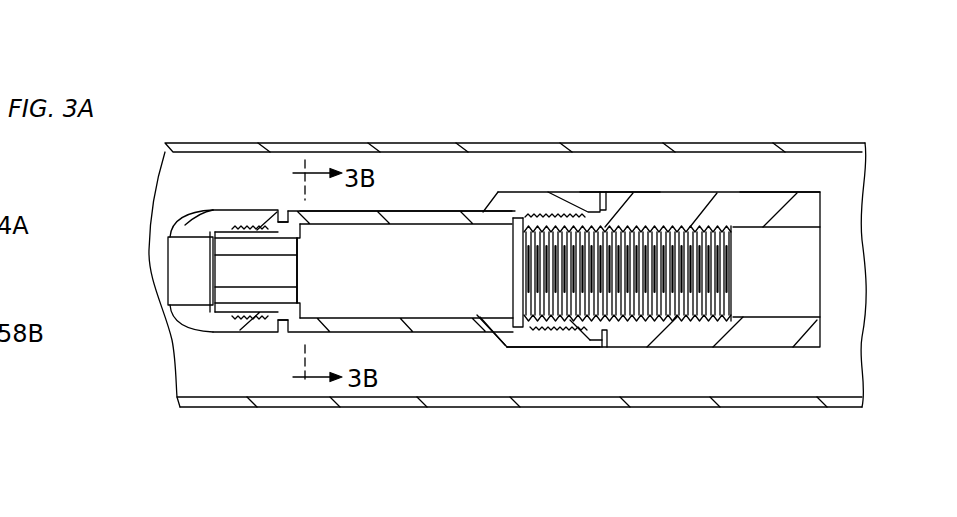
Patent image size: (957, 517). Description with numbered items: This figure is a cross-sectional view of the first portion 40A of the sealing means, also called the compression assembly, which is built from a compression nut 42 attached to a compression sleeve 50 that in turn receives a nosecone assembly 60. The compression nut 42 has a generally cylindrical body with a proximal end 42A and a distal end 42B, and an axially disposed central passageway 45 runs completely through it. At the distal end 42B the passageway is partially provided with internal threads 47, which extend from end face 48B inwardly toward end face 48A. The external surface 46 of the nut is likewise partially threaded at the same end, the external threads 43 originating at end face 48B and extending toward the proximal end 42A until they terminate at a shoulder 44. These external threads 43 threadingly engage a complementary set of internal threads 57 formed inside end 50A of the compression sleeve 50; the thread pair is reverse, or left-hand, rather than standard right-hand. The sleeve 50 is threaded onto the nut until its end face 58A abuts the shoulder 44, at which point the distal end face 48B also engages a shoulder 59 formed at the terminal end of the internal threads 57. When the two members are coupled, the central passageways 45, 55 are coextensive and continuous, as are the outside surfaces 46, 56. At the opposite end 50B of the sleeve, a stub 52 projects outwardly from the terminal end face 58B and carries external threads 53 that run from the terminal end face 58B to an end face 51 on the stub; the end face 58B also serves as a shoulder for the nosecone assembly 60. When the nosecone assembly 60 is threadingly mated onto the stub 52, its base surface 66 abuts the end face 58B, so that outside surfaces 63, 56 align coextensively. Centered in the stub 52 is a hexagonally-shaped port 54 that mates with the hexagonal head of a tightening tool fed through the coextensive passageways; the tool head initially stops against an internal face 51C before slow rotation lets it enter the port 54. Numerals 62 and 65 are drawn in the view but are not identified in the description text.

The first portion of the sealing means 40A is at (820, 135).
The compression nut 42 is at (755, 225).
The proximal end 42A is at (792, 185).
The distal end 42B is at (630, 186).
The external threads 43 is at (618, 229).
The shoulder 44 is at (607, 328).
The central passageway 45 is at (786, 283).
The external surface 46 is at (742, 356).
The internal threads 47 is at (687, 317).
The end face 48A is at (822, 212).
The end face 48B is at (513, 228).
The compression sleeve 50 is at (424, 322).
The end of compression sleeve 50A is at (572, 186).
The opposite end of sleeve 50B is at (340, 207).
The end face 51 is at (205, 235).
The internal face 51C is at (300, 304).
The stub 52 is at (253, 298).
The external threads 53 is at (221, 231).
The hexagonally-shaped port 54 is at (269, 272).
The central passageway 55 is at (507, 285).
The outside surface 56 is at (539, 356).
The internal threads 57 is at (518, 215).
The end face 58A is at (606, 330).
The terminal end face 58B is at (283, 320).
The shoulder 59 is at (501, 324).
The nosecone assembly 60 is at (258, 215).
The lower rounded edge 62 is at (223, 310).
The outside surface 63 is at (216, 199).
The front opening 65 is at (169, 268).
The nosecone base surface 66 is at (305, 220).